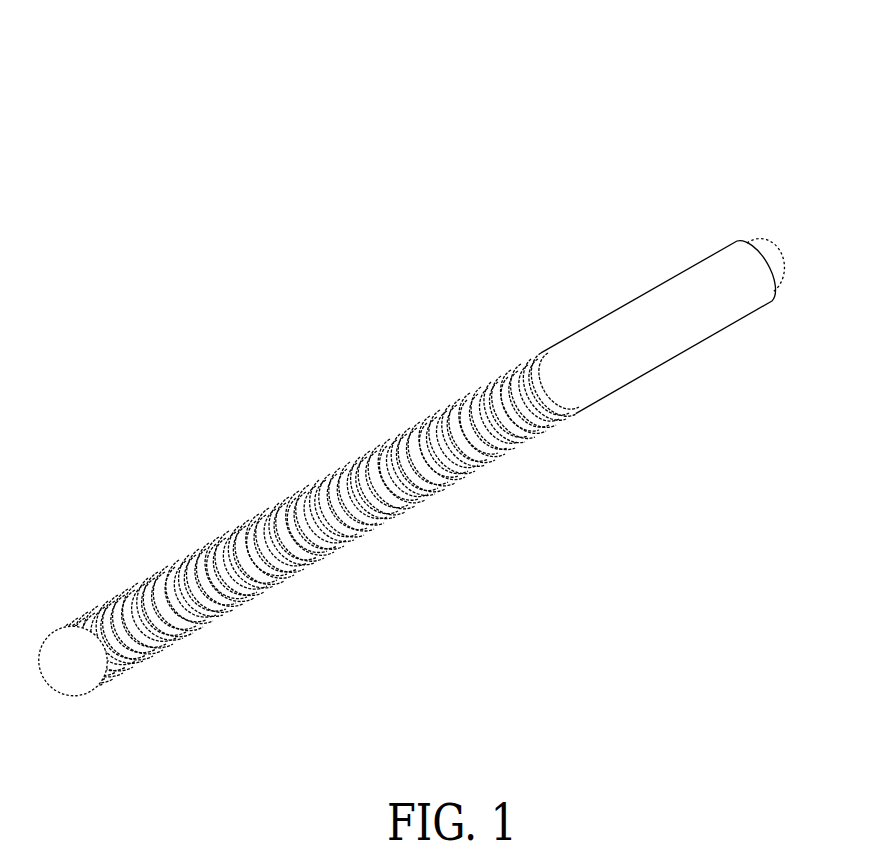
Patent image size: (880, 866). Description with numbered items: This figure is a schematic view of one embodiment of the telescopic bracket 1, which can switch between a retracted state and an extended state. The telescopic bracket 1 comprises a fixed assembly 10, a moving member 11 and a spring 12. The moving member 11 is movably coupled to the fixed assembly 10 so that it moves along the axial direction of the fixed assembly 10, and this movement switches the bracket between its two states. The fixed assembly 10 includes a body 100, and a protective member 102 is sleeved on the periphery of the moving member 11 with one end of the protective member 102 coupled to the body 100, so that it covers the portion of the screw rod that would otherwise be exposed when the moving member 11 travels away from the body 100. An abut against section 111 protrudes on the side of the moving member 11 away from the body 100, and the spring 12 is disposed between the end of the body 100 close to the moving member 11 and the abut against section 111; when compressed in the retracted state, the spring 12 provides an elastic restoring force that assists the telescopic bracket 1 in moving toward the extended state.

The telescopic bracket 1 is at (776, 96).
The fixed assembly 10 is at (589, 308).
The body 100 is at (707, 340).
The protective member 102 is at (447, 428).
The moving member 11 is at (172, 600).
The spring 12 is at (438, 492).
The abut against section 111 is at (120, 670).